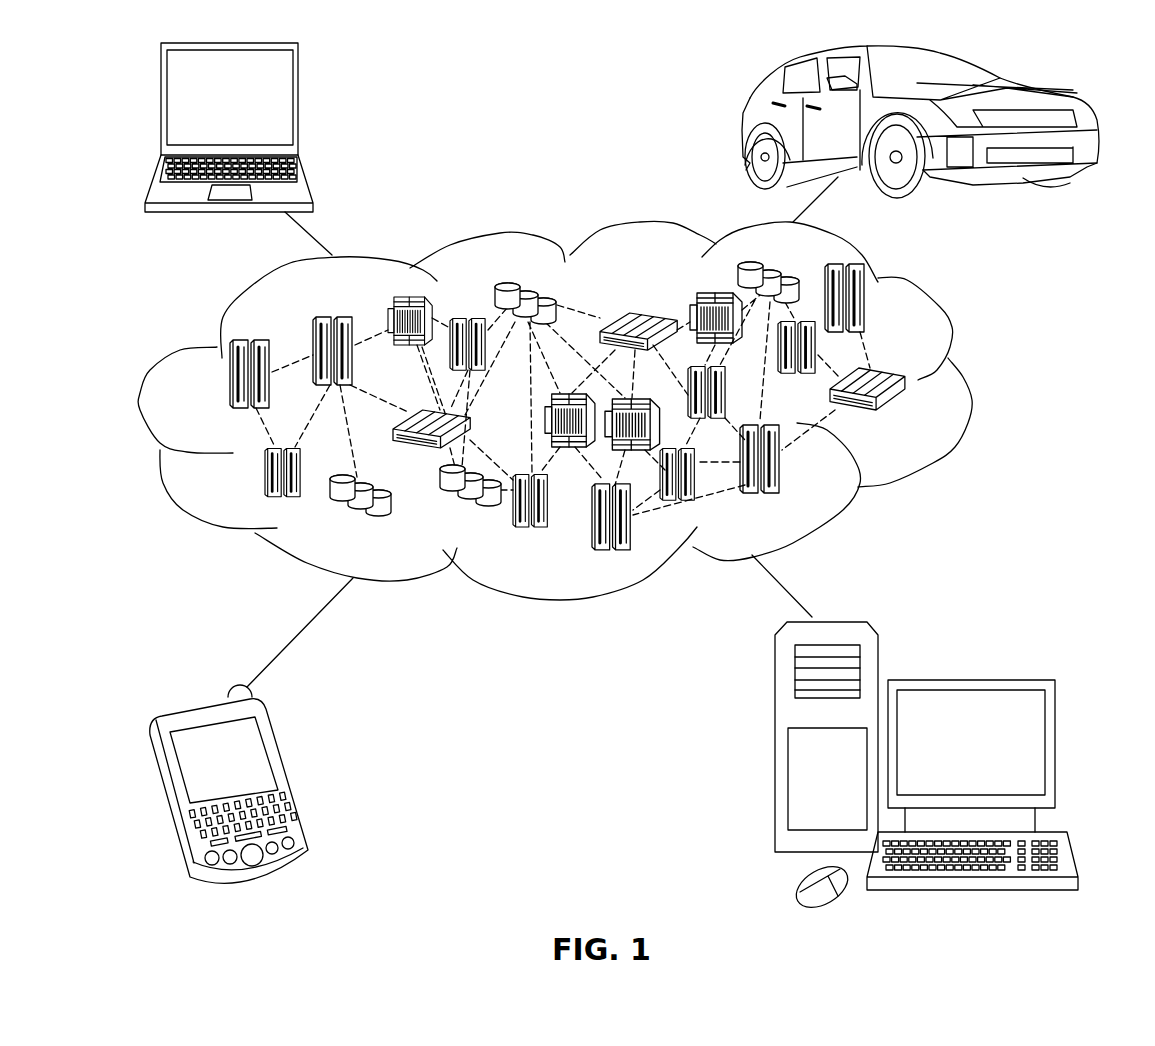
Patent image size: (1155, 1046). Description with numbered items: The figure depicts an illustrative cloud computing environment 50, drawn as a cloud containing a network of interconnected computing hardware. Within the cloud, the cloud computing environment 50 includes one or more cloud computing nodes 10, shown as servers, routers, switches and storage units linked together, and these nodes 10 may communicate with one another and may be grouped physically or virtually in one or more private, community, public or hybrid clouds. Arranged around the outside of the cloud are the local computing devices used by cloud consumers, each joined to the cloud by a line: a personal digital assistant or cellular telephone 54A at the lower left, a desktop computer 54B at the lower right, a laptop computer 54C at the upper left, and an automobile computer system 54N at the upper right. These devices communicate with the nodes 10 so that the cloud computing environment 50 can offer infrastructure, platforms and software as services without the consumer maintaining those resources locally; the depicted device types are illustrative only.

The cloud computing nodes 10 is at (908, 415).
The cloud computing environment 50 is at (966, 385).
The personal digital assistant (PDA) or cellular telephone 54A is at (290, 773).
The desktop computer 54B is at (968, 678).
The laptop computer 54C is at (300, 107).
The automobile computer system 54N is at (743, 120).